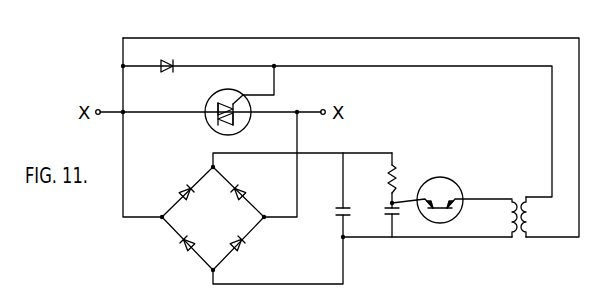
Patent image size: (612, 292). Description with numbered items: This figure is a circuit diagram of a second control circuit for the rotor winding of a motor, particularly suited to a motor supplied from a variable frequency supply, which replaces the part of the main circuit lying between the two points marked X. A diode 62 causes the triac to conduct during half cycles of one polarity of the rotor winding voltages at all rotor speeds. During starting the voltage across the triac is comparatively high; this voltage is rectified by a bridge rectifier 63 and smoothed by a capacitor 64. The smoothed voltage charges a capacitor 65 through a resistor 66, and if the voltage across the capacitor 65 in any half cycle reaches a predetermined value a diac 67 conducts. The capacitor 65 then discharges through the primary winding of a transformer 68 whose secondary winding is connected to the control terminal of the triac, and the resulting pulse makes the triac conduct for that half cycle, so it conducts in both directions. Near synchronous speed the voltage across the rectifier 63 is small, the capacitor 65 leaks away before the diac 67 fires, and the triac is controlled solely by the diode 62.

The diode 62 is at (173, 60).
The bridge rectifier 63 is at (185, 227).
The capacitor 64 is at (352, 212).
The capacitor 65 is at (384, 226).
The resistor 66 is at (398, 182).
The diac 67 is at (460, 207).
The transformer 68 is at (534, 212).